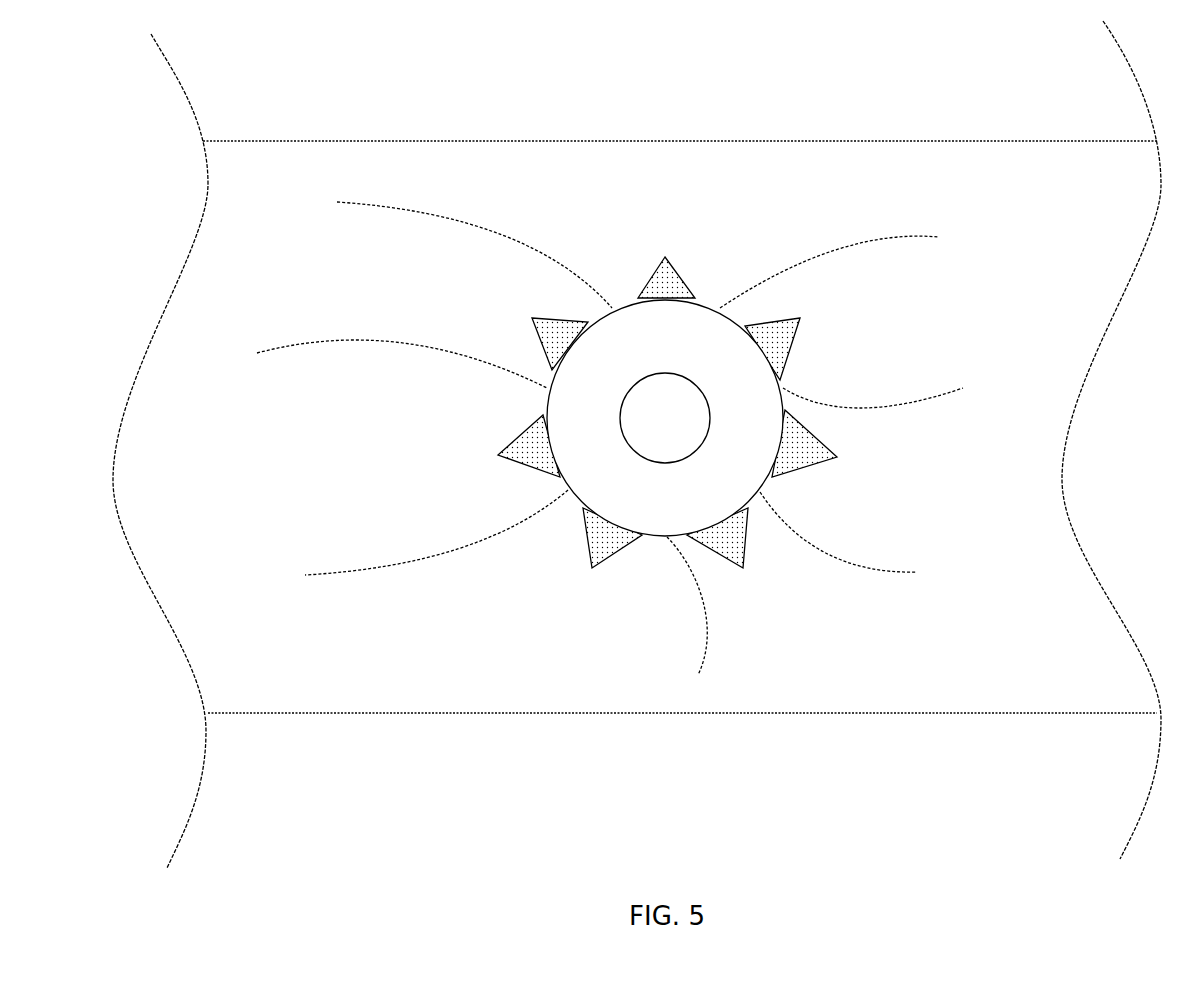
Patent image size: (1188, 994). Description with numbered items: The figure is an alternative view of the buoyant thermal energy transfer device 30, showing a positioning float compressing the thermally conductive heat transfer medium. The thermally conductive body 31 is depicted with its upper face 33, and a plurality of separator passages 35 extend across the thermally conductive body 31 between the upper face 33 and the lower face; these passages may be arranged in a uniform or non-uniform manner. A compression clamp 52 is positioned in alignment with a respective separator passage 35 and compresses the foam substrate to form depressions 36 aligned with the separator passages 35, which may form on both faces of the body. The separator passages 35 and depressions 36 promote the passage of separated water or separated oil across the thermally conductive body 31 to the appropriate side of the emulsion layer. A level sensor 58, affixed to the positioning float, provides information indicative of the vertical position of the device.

The buoyant thermal energy transfer device 30 is at (100, 292).
The thermally conductive body 31 is at (788, 141).
The upper face 33 is at (257, 706).
The separator passages 35 is at (665, 257).
The depressions 36 is at (495, 232).
The compression clamps 52 is at (703, 300).
The level sensors 58 is at (698, 387).